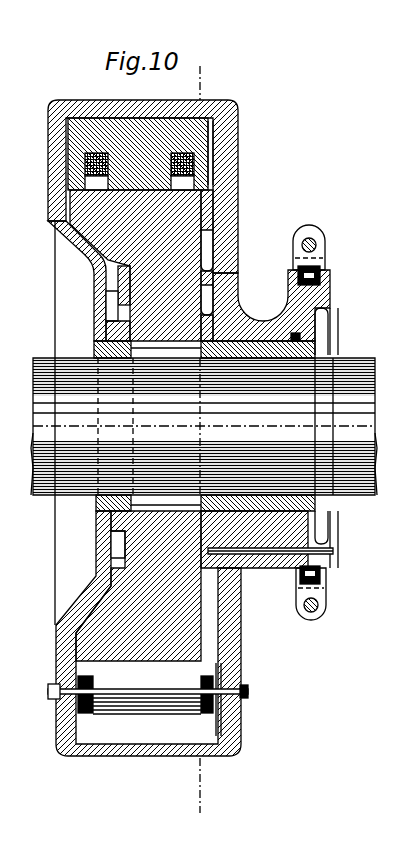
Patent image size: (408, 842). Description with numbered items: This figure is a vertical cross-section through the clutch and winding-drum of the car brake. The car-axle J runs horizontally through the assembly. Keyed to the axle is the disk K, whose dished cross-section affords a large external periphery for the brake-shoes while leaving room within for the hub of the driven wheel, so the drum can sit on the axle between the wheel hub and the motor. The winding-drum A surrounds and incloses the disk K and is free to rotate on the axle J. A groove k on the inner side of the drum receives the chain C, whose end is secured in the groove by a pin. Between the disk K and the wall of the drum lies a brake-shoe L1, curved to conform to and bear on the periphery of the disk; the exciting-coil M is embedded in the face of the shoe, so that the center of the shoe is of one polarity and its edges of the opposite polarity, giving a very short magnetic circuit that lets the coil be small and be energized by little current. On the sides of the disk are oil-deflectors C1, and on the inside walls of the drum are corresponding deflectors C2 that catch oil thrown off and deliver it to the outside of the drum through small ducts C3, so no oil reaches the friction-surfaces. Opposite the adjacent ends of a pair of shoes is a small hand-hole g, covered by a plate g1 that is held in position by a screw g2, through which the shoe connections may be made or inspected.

The winding-drum A is at (143, 177).
The brake-shoe L1 is at (220, 100).
The exciting-coil M is at (196, 160).
The disk K is at (68, 243).
The oil-deflector C2 is at (111, 283).
The duct C3 is at (98, 297).
The oil-deflector C1 is at (100, 318).
The groove k is at (298, 360).
The car-axle J is at (204, 426).
The chain C is at (305, 545).
The hand-hole g is at (222, 702).
The plate g1 is at (228, 660).
The screw g2 is at (242, 683).